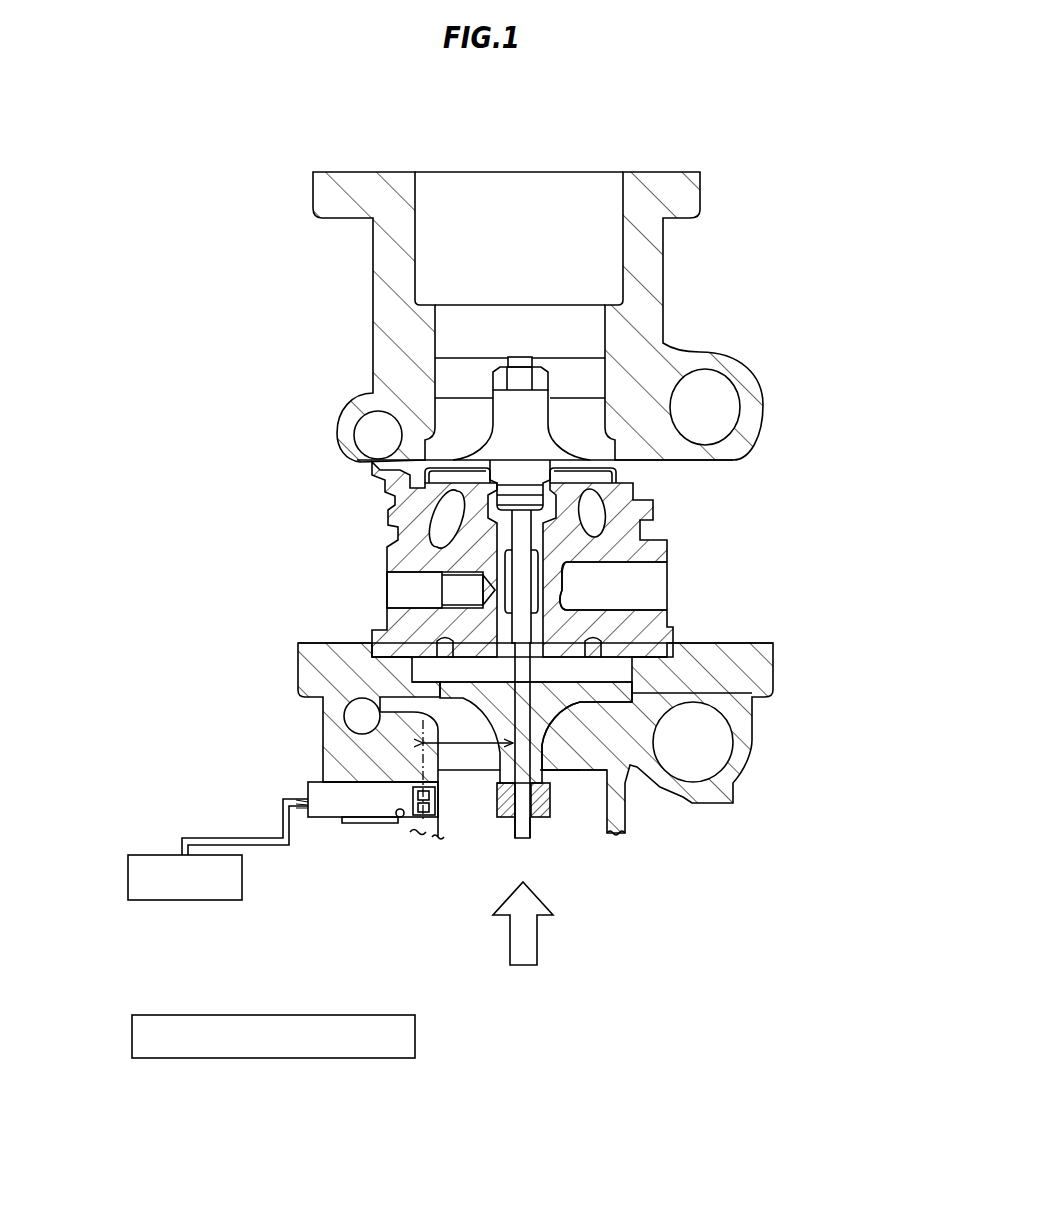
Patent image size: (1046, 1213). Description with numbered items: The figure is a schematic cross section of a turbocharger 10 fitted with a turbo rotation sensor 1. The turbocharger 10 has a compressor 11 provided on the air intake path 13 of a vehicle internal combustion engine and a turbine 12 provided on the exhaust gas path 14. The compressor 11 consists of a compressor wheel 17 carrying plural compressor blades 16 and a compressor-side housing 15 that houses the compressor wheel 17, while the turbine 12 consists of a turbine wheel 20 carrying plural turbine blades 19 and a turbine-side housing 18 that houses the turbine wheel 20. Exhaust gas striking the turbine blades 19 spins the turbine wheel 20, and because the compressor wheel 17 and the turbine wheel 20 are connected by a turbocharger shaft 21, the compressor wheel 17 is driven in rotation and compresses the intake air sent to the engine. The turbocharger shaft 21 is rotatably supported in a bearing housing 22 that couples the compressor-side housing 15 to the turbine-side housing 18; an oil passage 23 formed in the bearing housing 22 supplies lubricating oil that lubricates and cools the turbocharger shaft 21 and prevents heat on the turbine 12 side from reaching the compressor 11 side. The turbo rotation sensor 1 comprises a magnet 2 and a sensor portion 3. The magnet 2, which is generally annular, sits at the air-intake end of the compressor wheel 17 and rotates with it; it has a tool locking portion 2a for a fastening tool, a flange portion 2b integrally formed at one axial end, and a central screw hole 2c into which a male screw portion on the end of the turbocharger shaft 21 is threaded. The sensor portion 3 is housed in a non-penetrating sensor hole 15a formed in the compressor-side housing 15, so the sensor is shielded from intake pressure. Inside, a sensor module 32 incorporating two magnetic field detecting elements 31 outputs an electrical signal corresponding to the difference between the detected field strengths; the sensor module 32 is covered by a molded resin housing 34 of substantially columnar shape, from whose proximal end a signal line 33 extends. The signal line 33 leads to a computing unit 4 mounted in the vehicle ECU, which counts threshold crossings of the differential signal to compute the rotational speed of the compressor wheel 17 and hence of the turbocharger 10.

The turbo rotation sensor 1 is at (375, 838).
The magnet 2 is at (508, 818).
The tool locking portion 2a is at (538, 819).
The flange portion 2b is at (551, 789).
The screw hole 2c is at (502, 812).
The sensor portion 3 is at (308, 808).
The computing unit 4 is at (183, 900).
The turbocharger 10 is at (278, 398).
The compressor 11 is at (308, 783).
The turbine 12 is at (333, 398).
The air intake path 13 is at (573, 827).
The exhaust gas path 14 is at (592, 167).
The compressor-side housing 15 is at (323, 745).
The sensor hole 15a is at (400, 827).
The compressor blades 16 is at (577, 747).
The compressor wheel 17 is at (420, 678).
The turbine-side housing 18 is at (377, 367).
The turbine blades 19 is at (572, 427).
The turbine wheel 20 is at (445, 452).
The turbocharger shaft 21 is at (523, 628).
The bearing housing 22 is at (388, 557).
The oil passage 23 is at (652, 587).
The magnetic field detecting elements 31 is at (421, 822).
The sensor module 32 is at (343, 772).
The signal line 33 is at (182, 847).
The housing 34 is at (343, 808).